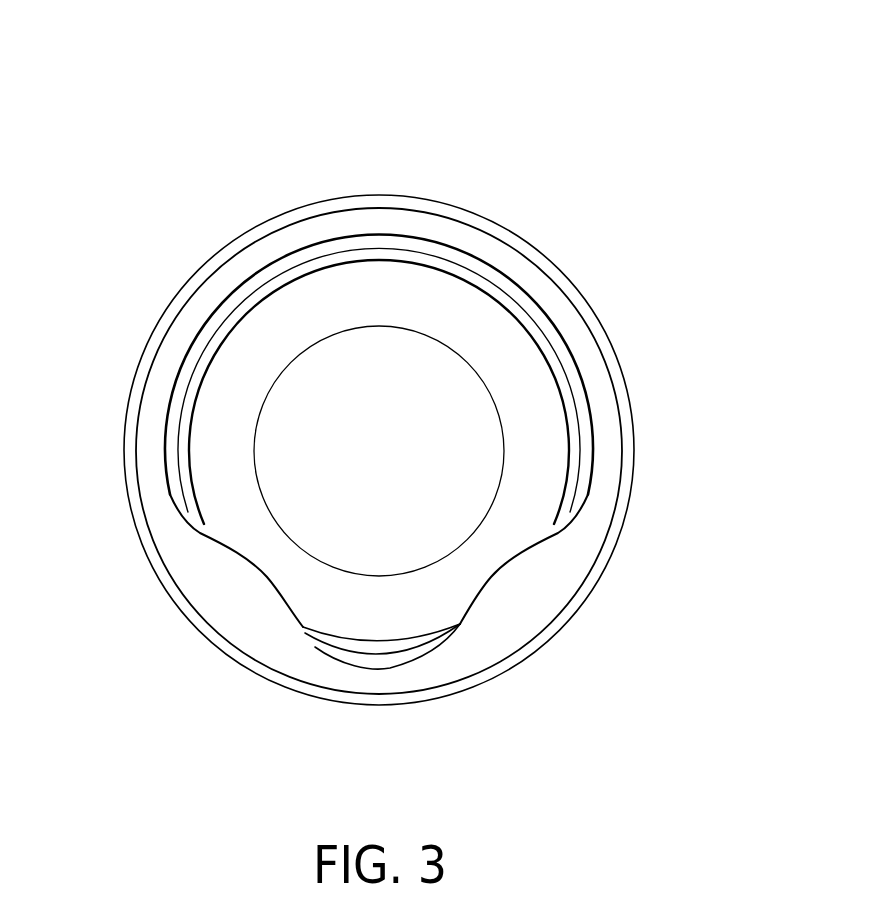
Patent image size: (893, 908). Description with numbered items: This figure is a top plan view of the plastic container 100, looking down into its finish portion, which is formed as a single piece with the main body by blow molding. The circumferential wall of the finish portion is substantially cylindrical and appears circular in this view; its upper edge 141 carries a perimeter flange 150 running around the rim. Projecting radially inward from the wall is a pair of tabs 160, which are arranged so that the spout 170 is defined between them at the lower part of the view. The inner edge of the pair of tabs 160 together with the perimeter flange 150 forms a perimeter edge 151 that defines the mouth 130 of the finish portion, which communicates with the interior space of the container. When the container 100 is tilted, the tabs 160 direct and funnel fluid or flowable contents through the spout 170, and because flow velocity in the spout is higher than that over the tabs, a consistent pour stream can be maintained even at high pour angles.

The plastic container 100 is at (160, 138).
The mouth 130 is at (397, 432).
The upper edge 141 is at (180, 312).
The perimeter flange 150 is at (583, 357).
The perimeter edge 151 is at (590, 420).
The pair of tabs 160 is at (493, 597).
The spout 170 is at (460, 645).